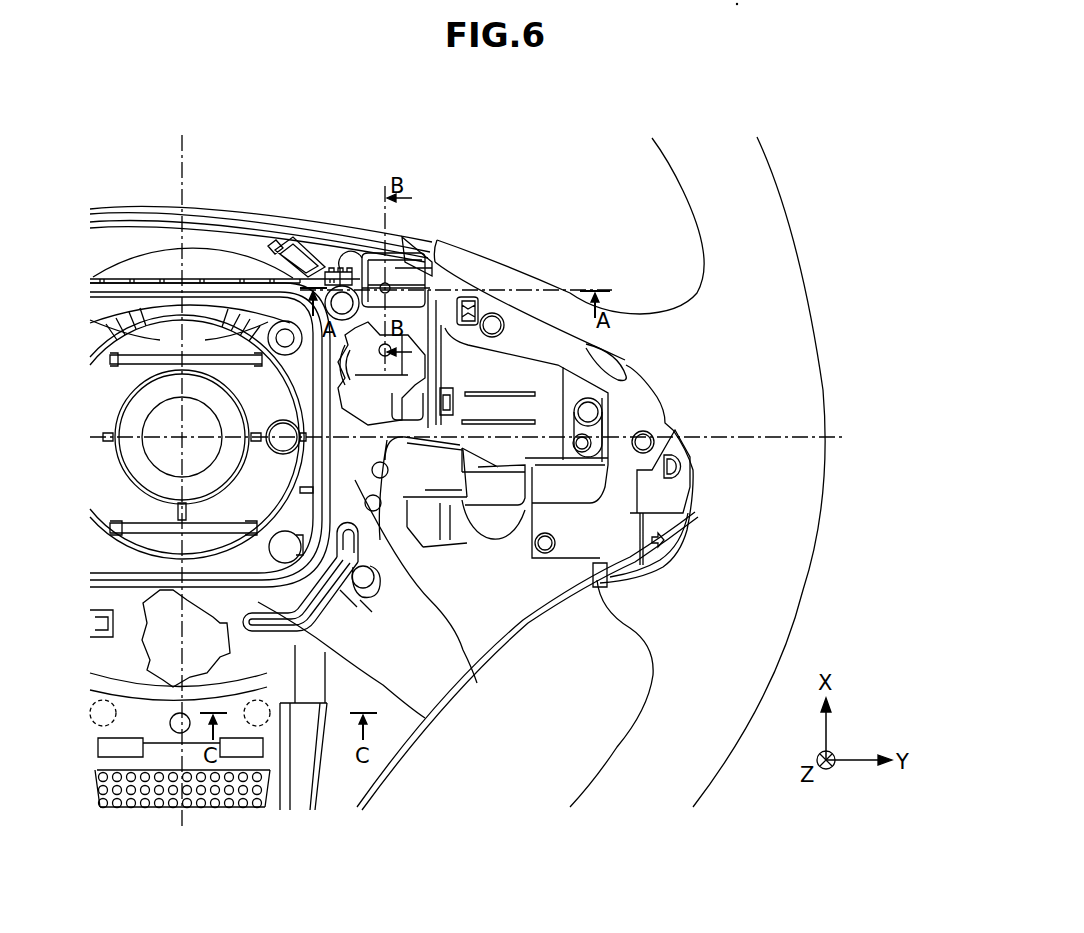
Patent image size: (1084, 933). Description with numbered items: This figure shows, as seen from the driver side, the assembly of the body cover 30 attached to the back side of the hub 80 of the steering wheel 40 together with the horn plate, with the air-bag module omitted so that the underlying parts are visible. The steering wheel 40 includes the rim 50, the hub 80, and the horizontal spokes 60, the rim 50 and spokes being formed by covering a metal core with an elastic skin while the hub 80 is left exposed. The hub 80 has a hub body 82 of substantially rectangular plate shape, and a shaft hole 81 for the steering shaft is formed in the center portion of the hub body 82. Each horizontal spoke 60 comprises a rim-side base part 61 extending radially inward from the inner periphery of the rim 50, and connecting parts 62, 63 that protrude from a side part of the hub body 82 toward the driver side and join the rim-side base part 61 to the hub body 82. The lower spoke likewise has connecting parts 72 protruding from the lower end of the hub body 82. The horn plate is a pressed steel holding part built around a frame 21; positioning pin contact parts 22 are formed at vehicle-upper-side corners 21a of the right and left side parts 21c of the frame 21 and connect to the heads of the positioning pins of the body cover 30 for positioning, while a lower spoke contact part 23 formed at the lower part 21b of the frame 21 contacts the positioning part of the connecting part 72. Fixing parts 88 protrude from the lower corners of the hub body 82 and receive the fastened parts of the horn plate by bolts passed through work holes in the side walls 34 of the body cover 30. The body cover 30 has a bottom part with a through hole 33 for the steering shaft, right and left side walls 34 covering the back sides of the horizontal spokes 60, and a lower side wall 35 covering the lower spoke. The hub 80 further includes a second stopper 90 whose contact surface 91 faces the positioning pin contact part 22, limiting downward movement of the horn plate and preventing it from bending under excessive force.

The frame 21 is at (232, 285).
The vehicle-upper-side corner 21a is at (352, 270).
The lower part 21b is at (127, 677).
The side part 21c is at (426, 594).
The positioning pin contact part 22 is at (400, 280).
The lower spoke contact part 23 is at (198, 723).
The body cover 30 is at (200, 230).
The through hole 33 is at (140, 258).
The side wall 34 is at (523, 377).
The lower side wall 35 is at (350, 793).
The steering wheel 40 is at (788, 174).
The rim 50 is at (778, 248).
The horizontal spoke 60 is at (525, 270).
The rim-side base part 61 is at (582, 547).
The connecting part 62 is at (463, 340).
The connecting part 63 is at (498, 492).
The connecting part 72 is at (300, 760).
The hub 80 is at (168, 352).
The shaft hole 81 is at (197, 408).
The hub body 82 is at (233, 380).
The fixing part 88 is at (445, 485).
The second stopper 90 is at (414, 300).
The contact surface 91 is at (410, 268).